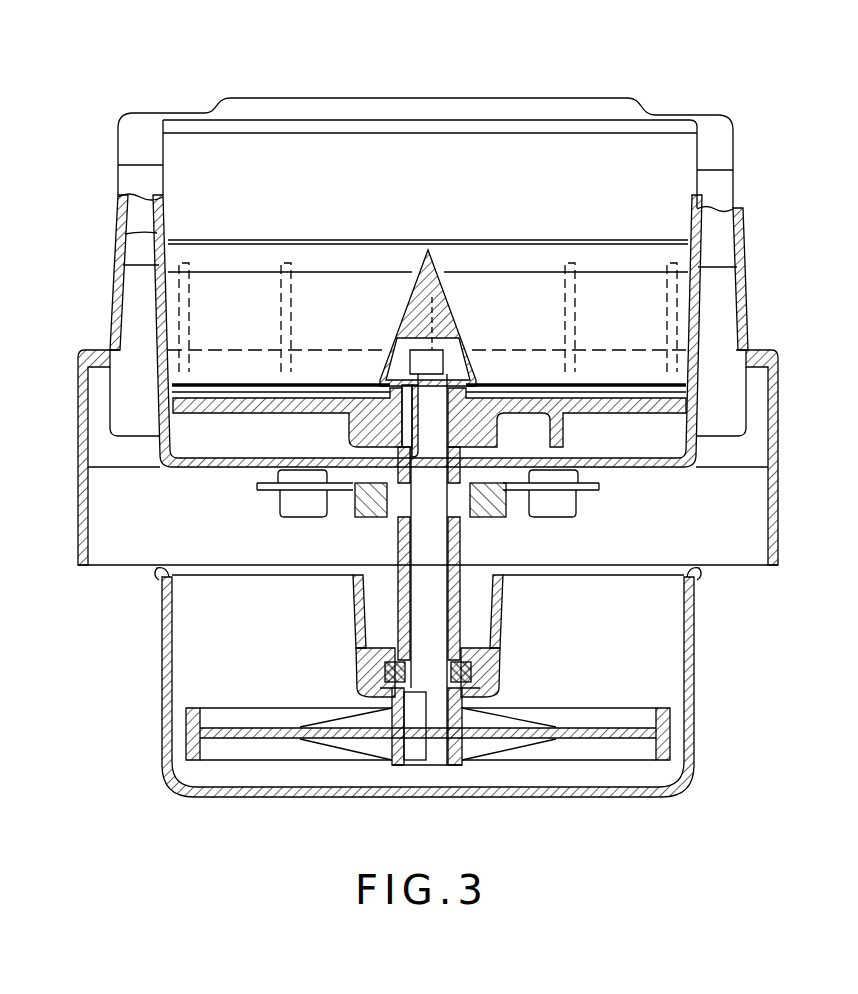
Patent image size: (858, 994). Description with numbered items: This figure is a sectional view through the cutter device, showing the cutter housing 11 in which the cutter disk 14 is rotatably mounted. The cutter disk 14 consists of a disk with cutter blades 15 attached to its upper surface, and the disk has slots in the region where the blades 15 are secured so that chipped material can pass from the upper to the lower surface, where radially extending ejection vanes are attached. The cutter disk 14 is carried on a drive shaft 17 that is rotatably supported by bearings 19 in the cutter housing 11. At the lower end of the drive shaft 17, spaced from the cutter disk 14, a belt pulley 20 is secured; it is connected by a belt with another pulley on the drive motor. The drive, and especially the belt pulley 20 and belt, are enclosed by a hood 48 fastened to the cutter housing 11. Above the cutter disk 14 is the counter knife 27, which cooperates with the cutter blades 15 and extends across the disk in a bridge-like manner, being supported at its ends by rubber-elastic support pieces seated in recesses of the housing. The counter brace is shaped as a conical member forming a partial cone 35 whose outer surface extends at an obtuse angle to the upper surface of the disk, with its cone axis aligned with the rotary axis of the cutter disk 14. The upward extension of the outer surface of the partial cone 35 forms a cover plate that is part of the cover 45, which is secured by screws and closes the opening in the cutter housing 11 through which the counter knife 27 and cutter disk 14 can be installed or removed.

The cover 45 is at (268, 143).
The cutter housing 11 is at (154, 235).
The counter knife 27 is at (677, 307).
The partial cone 35 is at (445, 280).
The cutter blades 15 is at (160, 394).
The cutter disk 14 is at (207, 405).
The bearings 19 is at (396, 498).
The drive shaft 17 is at (425, 594).
The hood 48 is at (694, 676).
The belt pulley 20 is at (186, 733).